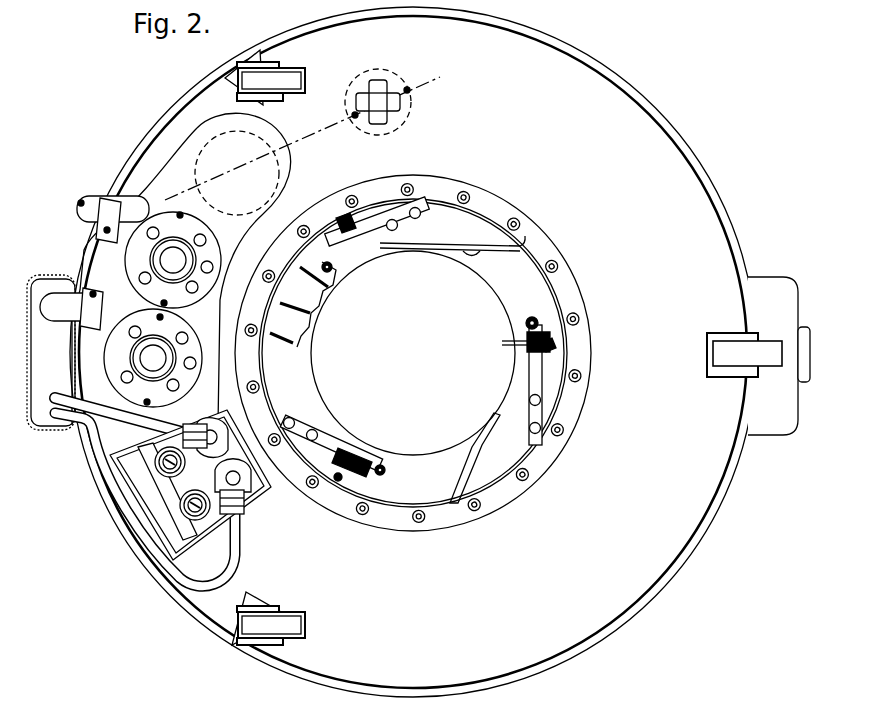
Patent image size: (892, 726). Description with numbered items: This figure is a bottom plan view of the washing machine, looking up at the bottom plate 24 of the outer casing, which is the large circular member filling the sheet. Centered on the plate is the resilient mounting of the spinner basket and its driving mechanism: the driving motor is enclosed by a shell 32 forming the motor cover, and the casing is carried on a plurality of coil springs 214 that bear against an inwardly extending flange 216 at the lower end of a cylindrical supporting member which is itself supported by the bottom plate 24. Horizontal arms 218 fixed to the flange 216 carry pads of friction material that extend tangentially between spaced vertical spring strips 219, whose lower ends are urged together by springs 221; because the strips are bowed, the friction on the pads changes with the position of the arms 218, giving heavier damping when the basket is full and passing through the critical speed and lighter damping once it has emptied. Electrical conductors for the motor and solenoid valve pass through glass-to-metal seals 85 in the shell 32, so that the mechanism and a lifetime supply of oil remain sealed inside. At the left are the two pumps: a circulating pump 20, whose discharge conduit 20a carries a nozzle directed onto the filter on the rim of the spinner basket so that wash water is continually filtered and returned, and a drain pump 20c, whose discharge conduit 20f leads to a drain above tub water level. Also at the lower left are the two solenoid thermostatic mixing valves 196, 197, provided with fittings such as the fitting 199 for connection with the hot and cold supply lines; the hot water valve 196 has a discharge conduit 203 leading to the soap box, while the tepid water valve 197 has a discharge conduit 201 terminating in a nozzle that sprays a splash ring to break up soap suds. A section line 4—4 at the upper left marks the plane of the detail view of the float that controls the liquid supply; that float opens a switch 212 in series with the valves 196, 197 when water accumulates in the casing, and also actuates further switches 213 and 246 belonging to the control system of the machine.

The bottom plate 24 is at (633, 543).
The circulating pump 20 is at (108, 353).
The conduit 20a is at (33, 288).
The drain pump 20c is at (127, 262).
The conduit 20f is at (81, 200).
The shell 32 is at (492, 303).
The glass-to-metal seals 85 is at (322, 283).
The solenoid thermostatic mixing valve 196 is at (211, 427).
The solenoid thermostatic mixing valve 197 is at (247, 493).
The fitting 199 is at (135, 524).
The discharge conduit 201 is at (173, 581).
The discharge conduit 203 is at (110, 420).
The switch 212 is at (408, 112).
The switch 213 is at (480, 125).
The switch 246 is at (480, 143).
The coil springs 214 is at (457, 450).
The inwardly extending flange 216 is at (453, 243).
The horizontal arms 218 is at (405, 223).
The vertical spring strips 219 is at (500, 347).
The springs 221 is at (557, 347).
The section line 4- 4 is at (171, 196).